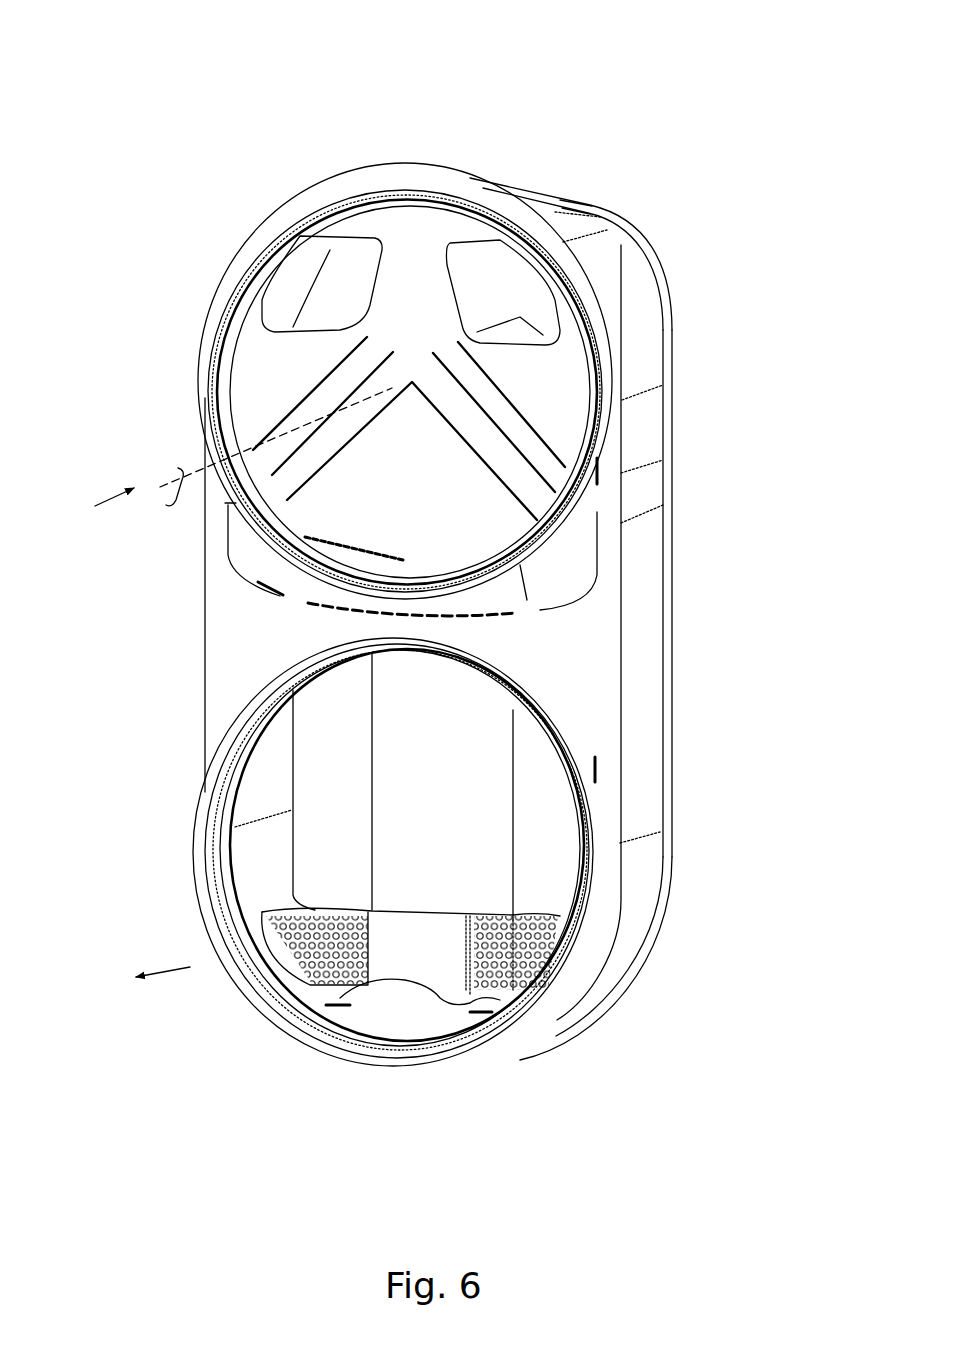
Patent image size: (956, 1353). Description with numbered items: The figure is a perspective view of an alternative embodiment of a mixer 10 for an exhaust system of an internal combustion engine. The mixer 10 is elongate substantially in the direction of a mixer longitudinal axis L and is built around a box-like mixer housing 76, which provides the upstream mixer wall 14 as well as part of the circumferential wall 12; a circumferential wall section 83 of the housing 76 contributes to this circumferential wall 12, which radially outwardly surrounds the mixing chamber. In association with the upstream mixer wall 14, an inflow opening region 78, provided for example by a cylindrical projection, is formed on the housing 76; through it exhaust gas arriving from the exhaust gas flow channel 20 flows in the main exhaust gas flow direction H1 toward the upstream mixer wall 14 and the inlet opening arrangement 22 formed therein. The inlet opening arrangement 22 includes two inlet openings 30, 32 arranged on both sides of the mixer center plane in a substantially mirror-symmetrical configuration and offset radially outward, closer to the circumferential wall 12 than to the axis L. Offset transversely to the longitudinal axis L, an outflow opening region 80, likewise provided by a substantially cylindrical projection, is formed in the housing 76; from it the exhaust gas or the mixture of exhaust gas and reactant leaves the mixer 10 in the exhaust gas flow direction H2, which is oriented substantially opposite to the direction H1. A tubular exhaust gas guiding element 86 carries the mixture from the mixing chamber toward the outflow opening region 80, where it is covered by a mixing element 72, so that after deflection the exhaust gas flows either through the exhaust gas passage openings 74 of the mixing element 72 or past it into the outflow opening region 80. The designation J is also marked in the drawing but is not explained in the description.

The mixer 10 is at (734, 72).
The circumferential wall 12 is at (634, 294).
The upstream mixer wall 14 is at (655, 396).
The exhaust gas flow channel 20 is at (242, 395).
The inlet opening arrangement 22 is at (389, 227).
The inlet opening 30 is at (330, 252).
The inlet opening 32 is at (485, 257).
The mixing element 72 is at (530, 918).
The exhaust gas passage openings 74 is at (347, 1000).
The box-like mixer housing 76 is at (675, 576).
The inflow opening region 78 is at (245, 340).
The outflow opening region 80 is at (230, 820).
The circumferential wall section 83 is at (612, 236).
The tubular exhaust gas guiding element 86 is at (513, 797).
The mixer longitudinal axis L is at (271, 467).
The direction J is at (135, 758).
The main exhaust gas flow direction H1 is at (74, 577).
The exhaust gas flow direction H2 is at (138, 1063).